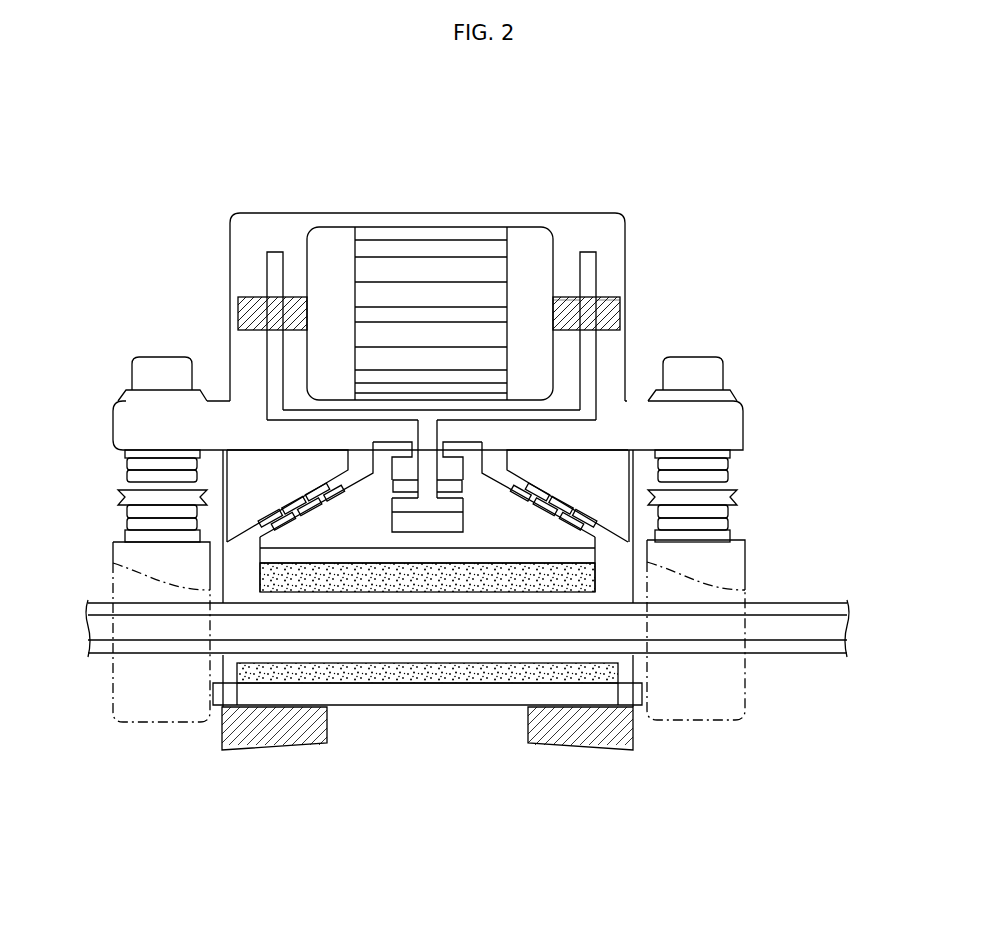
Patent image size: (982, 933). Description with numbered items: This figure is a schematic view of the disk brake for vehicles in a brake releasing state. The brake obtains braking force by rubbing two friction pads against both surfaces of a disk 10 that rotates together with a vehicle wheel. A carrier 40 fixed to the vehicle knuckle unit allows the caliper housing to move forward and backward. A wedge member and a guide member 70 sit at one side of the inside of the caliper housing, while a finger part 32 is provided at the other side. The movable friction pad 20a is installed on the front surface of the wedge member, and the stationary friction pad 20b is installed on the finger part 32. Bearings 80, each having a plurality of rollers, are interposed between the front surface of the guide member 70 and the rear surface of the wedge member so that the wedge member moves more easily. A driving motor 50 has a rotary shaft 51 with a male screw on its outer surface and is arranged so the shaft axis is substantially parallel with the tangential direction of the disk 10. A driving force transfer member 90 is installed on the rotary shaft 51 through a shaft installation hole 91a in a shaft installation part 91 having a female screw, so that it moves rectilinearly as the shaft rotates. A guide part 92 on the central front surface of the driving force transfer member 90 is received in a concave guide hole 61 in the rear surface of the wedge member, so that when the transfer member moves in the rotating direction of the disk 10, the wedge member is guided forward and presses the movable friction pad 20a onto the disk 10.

The disk 10 is at (822, 605).
The movable friction pad 20a is at (385, 598).
The stationary friction pad 20b is at (465, 692).
The finger part 32 is at (278, 737).
The carrier 40 is at (755, 706).
The driving motor 50 is at (493, 222).
The rotary shaft 51 is at (600, 300).
The guide hole 61 is at (450, 463).
The guide member 70 is at (238, 483).
The bearing 80 is at (253, 538).
The driving force transfer member 90 is at (415, 312).
The shaft installation part 91 is at (272, 262).
The shaft installation hole 91a is at (270, 300).
The guide part 92 is at (410, 478).